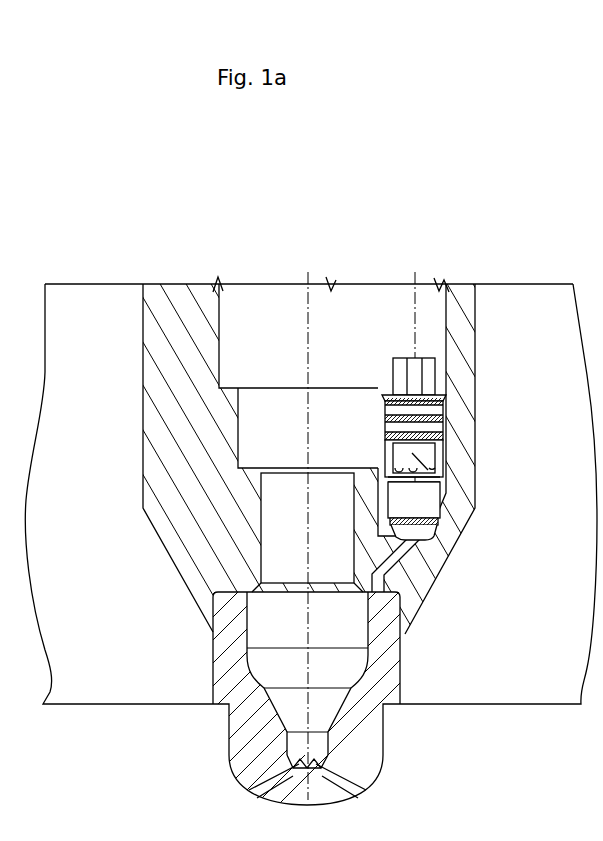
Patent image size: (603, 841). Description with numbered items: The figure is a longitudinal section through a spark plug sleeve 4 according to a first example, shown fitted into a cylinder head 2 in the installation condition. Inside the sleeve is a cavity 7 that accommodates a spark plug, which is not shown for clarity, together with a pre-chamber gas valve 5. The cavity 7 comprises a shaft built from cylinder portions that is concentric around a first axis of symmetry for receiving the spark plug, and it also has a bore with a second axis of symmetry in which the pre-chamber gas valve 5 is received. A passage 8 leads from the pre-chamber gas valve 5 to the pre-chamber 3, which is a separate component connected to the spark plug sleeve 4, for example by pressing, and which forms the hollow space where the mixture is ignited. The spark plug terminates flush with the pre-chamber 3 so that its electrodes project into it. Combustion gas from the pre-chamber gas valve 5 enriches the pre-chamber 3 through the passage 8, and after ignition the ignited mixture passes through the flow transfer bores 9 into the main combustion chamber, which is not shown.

The cylinder head 2 is at (301, 487).
The pre-chamber 3 is at (378, 642).
The spark plug sleeve 4 is at (448, 476).
The pre-chamber gas valve 5 is at (437, 493).
The cavity 7 is at (273, 308).
The passage 8 is at (400, 550).
The flow transfer bores 9 is at (366, 790).